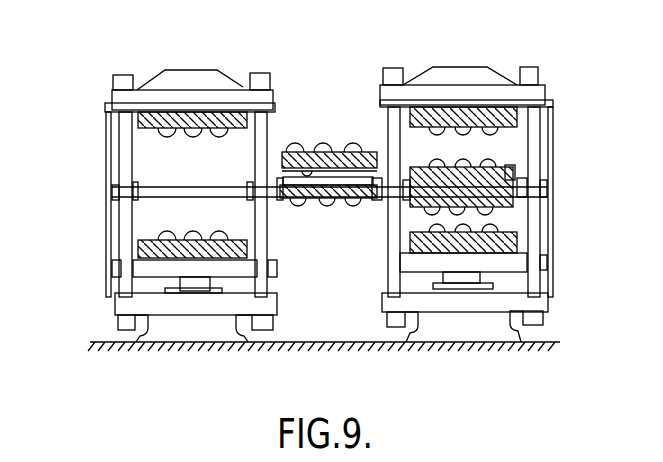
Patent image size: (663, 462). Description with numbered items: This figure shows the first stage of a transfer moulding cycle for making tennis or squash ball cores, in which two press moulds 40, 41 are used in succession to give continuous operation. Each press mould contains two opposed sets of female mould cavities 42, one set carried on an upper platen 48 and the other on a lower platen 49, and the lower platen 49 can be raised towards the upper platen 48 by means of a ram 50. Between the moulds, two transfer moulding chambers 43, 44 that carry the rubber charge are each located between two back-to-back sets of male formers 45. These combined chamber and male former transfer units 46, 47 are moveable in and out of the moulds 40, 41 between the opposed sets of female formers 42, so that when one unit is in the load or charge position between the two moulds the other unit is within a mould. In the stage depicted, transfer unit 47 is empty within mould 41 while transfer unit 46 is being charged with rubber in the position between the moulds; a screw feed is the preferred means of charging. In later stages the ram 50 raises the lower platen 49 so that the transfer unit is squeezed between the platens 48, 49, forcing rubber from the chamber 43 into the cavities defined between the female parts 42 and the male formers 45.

The press mould 40 is at (237, 80).
The press mould 41 is at (534, 134).
The female mould cavities 42 is at (463, 110).
The transfer moulding chamber 43 is at (313, 145).
The transfer moulding chamber 44 is at (505, 206).
The male formers 45 is at (351, 145).
The transfer unit 46 is at (281, 148).
The transfer unit 47 is at (502, 164).
The upper platen 48 is at (148, 110).
The lower platen 49 is at (140, 243).
The ram 50 is at (186, 285).